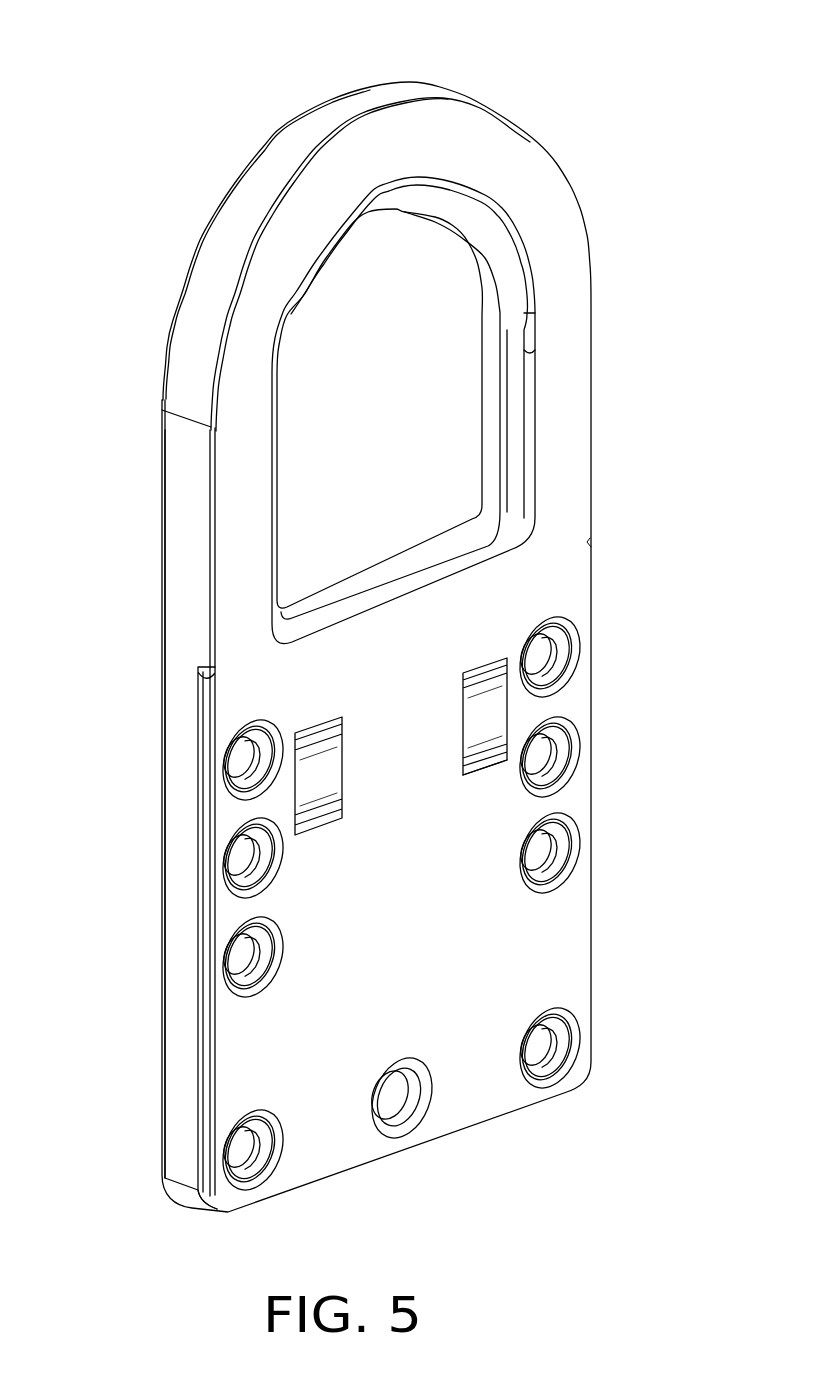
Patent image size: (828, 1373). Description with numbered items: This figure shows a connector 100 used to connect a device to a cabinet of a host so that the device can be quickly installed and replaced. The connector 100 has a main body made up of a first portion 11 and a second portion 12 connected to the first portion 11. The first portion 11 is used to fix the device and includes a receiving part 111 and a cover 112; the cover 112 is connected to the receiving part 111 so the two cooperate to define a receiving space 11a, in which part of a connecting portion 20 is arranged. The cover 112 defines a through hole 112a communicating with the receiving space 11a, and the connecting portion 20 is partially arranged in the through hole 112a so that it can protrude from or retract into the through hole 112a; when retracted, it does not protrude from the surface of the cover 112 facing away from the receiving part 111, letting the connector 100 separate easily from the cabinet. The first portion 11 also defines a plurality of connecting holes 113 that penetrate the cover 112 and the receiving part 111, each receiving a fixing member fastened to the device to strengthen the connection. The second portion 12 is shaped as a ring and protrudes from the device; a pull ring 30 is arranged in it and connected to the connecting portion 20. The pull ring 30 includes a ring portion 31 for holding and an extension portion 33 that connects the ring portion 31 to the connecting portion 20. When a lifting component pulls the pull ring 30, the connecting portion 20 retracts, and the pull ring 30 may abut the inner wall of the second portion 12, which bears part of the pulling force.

The connector 100 is at (397, 35).
The first portion 11 is at (88, 1033).
The receiving part 111 is at (183, 1086).
The cover 112 is at (263, 1047).
The through hole 112a is at (310, 727).
The connecting holes 113 is at (240, 762).
The receiving space 11a is at (497, 762).
The second portion 12 is at (297, 148).
The connecting portion 20 is at (315, 792).
The pull ring 30 is at (612, 113).
The ring portion 31 is at (466, 203).
The extension portion 33 is at (394, 587).